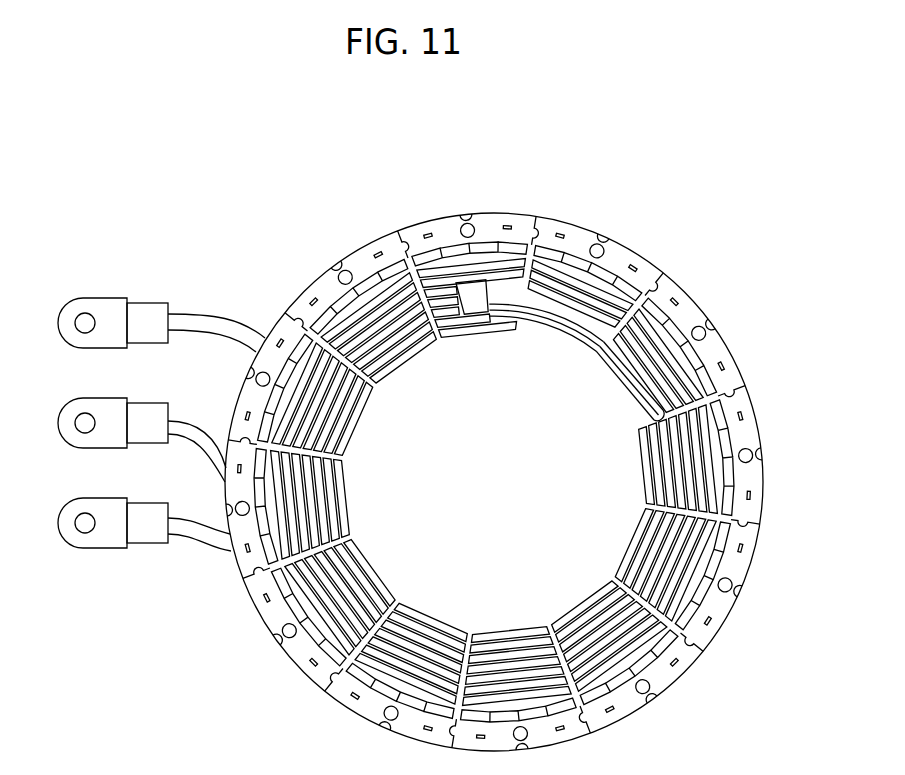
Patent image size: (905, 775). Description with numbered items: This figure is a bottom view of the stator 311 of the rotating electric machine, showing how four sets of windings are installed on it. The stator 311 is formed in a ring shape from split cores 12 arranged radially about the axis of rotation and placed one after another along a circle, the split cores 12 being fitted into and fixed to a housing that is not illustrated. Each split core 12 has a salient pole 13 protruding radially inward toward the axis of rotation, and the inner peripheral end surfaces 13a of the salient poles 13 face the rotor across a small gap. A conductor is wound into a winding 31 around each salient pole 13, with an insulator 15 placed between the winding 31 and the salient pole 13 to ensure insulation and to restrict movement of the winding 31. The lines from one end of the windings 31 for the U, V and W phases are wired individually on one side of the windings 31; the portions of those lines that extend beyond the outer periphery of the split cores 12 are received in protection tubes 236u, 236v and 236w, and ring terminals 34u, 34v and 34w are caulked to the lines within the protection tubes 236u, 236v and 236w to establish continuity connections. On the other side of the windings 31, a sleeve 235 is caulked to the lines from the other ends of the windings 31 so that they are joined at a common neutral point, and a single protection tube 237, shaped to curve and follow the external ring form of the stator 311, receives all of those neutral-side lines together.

The stator 311 is at (586, 130).
The split core 12 is at (506, 482).
The salient pole 13 is at (615, 381).
The inner peripheral end surface 13a is at (616, 424).
The insulator 15 is at (699, 461).
The winding 31 is at (514, 664).
The sleeve 235 is at (498, 241).
The protection tube 237 is at (565, 276).
The ring terminal 34u is at (80, 300).
The ring terminal 34v is at (80, 400).
The ring terminal 34w is at (80, 500).
The protection tube 236u is at (210, 316).
The protection tube 236v is at (197, 424).
The protection tube 236w is at (188, 560).